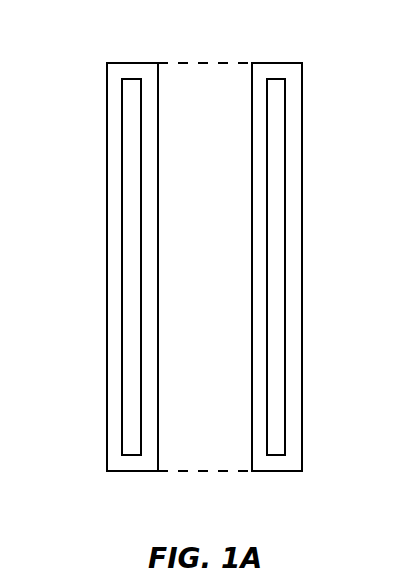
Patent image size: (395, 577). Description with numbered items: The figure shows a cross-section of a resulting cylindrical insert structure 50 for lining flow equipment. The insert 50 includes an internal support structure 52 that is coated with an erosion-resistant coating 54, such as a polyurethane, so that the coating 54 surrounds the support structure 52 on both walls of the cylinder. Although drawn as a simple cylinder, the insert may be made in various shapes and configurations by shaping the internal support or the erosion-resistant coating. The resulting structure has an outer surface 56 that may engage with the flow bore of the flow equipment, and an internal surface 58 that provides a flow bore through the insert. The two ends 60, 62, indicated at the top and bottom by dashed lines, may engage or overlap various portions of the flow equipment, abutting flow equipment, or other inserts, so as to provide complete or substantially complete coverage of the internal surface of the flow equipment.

The cylindrical insert structure 50 is at (91, 278).
The internal support structure 52 is at (128, 183).
The erosion-resistant coating 54 is at (113, 119).
The outer surface 56 is at (303, 146).
The internal surface 58 is at (250, 192).
The end 60 is at (202, 62).
The end 62 is at (200, 472).